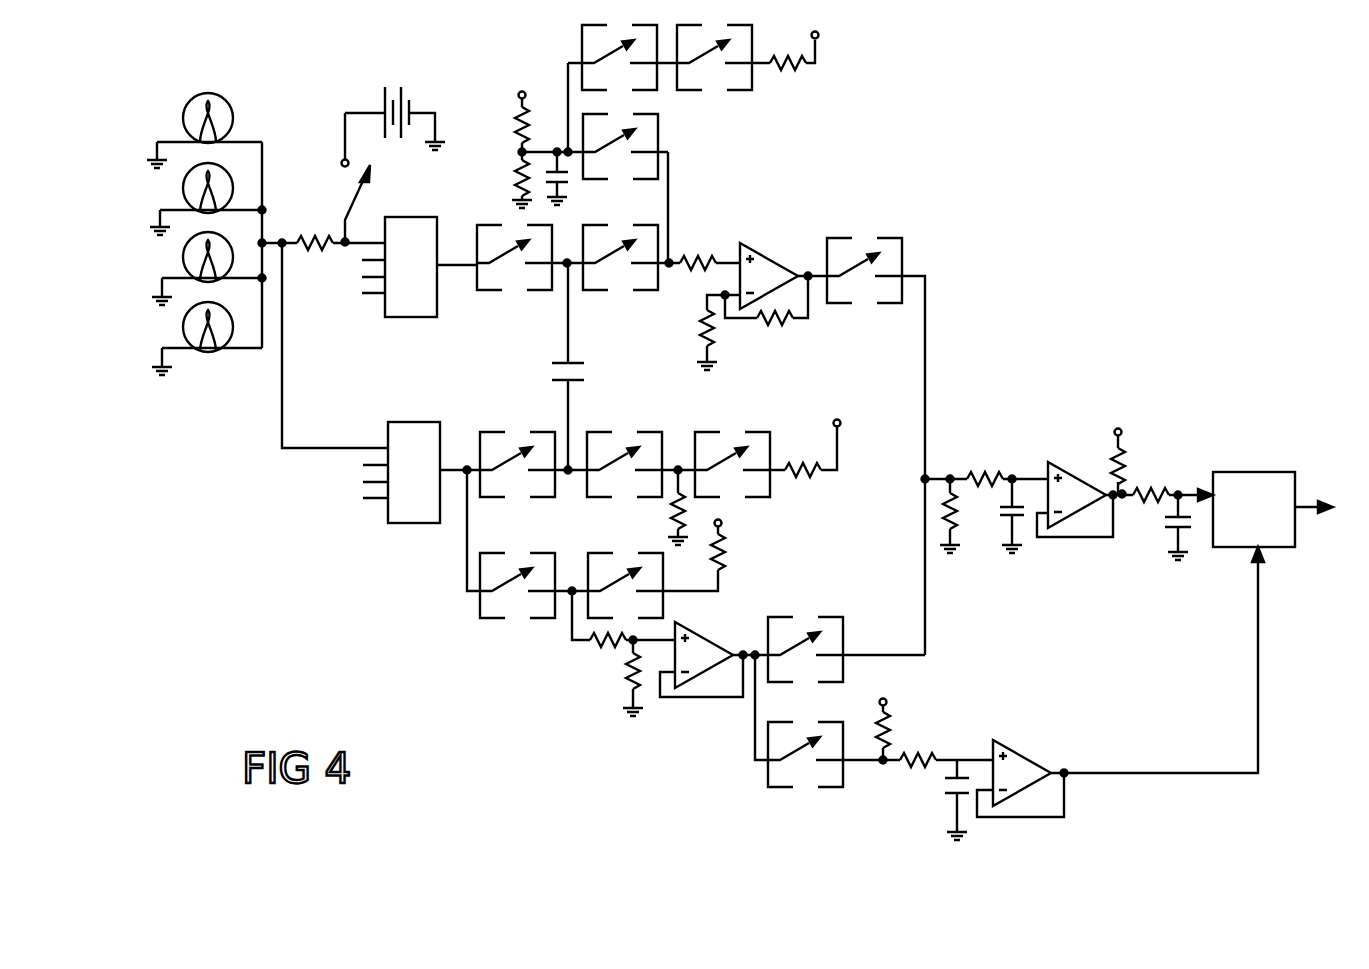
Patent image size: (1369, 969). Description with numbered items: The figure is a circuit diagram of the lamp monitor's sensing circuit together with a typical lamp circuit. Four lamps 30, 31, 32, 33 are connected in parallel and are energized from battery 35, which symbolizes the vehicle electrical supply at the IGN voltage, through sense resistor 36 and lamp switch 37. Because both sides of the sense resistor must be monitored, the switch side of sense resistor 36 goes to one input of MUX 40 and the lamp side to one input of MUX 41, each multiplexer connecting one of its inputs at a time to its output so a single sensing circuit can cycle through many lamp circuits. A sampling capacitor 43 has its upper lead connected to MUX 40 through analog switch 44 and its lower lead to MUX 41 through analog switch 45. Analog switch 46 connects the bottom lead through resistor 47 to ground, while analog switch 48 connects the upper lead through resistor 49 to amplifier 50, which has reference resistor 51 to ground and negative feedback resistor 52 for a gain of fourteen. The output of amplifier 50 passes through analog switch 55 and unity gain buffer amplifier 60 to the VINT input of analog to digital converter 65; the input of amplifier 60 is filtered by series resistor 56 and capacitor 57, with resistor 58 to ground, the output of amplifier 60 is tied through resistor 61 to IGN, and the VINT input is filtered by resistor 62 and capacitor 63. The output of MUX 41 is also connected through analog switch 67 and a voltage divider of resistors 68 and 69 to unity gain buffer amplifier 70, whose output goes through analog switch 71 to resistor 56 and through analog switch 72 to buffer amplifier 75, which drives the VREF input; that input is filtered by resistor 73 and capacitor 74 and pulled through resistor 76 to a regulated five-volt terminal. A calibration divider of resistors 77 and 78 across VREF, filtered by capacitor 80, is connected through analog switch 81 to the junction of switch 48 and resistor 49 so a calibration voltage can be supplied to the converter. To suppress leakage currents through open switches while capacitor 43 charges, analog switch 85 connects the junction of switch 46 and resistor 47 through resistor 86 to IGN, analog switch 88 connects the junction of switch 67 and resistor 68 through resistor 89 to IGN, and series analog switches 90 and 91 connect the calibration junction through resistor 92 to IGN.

The lamp 30 is at (208, 93).
The lamp 31 is at (224, 176).
The lamp 32 is at (183, 250).
The lamp 33 is at (183, 328).
The battery 35 is at (412, 95).
The sense resistor 36 is at (325, 250).
The lamp switch 37 is at (372, 178).
The MUX 40 is at (405, 317).
The MUX 41 is at (400, 523).
The capacitor 43 is at (560, 365).
The analog switch 44 is at (503, 285).
The analog switch 45 is at (520, 440).
The analog switch 46 is at (628, 440).
The resistor 47 is at (672, 510).
The analog switch 48 is at (615, 285).
The resistor 49 is at (705, 252).
The amplifier 50 is at (775, 256).
The reference resistor 51 is at (700, 330).
The negative feedback resistor 52 is at (790, 325).
The analog switch 55 is at (858, 242).
The series resistor 56 is at (975, 470).
The capacitor 57 is at (1014, 495).
The resistor 58 is at (955, 520).
The unity gain buffer amplifier 60 is at (1078, 470).
The resistor 61 is at (1125, 460).
The series resistor 62 is at (1140, 505).
The capacitor 63 is at (1170, 527).
The analog to digital converter 65 is at (1255, 472).
The analog switch 67 is at (512, 600).
The resistor 68 is at (600, 648).
The resistor 69 is at (628, 700).
The unity gain buffer amplifier 70 is at (715, 638).
The analog switch 71 is at (805, 620).
The analog switch 72 is at (795, 772).
The series resistor 73 is at (910, 768).
The capacitor 74 is at (948, 795).
The buffer amplifier 75 is at (1038, 760).
The resistor 76 is at (878, 725).
The resistor 77 is at (515, 122).
The resistor 78 is at (515, 176).
The capacitor 80 is at (572, 182).
The analog switch 81 is at (657, 127).
The analog switch 85 is at (740, 440).
The resistor 86 is at (805, 470).
The analog switch 88 is at (615, 565).
The resistor 89 is at (730, 555).
The analog switch 90 is at (620, 25).
The analog switch 91 is at (720, 85).
The resistor 92 is at (800, 70).